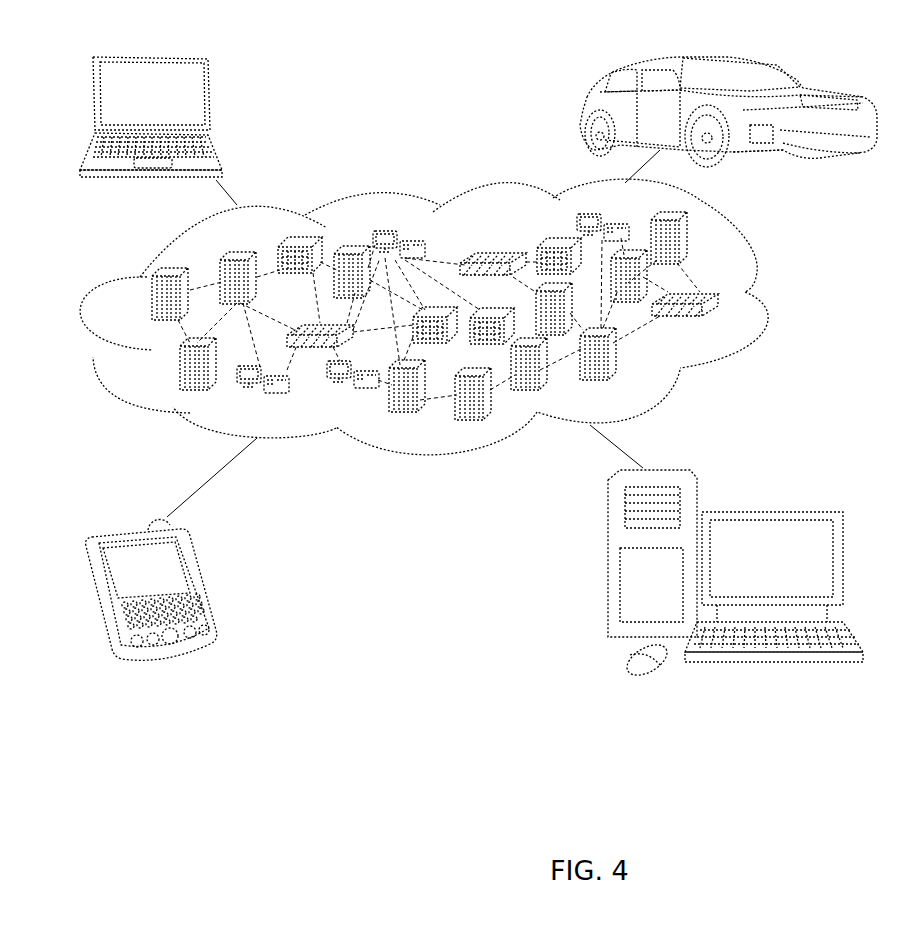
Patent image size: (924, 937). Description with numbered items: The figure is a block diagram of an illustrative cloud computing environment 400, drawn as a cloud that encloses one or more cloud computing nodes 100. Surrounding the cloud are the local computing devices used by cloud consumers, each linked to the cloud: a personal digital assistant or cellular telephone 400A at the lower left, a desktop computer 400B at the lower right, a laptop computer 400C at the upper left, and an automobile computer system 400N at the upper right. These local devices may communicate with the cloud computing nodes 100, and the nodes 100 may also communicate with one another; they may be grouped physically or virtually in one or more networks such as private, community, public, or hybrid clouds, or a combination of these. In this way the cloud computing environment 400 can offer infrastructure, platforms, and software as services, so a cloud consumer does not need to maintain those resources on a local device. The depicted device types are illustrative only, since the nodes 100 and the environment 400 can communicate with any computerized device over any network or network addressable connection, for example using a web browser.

The cloud computing environment 400 is at (770, 297).
The cloud computing nodes 100 is at (723, 322).
The personal digital assistant (PDA) or cellular telephone 400A is at (203, 580).
The desktop computer 400B is at (770, 510).
The laptop computer 400C is at (210, 103).
The automobile computer system 400N is at (587, 112).